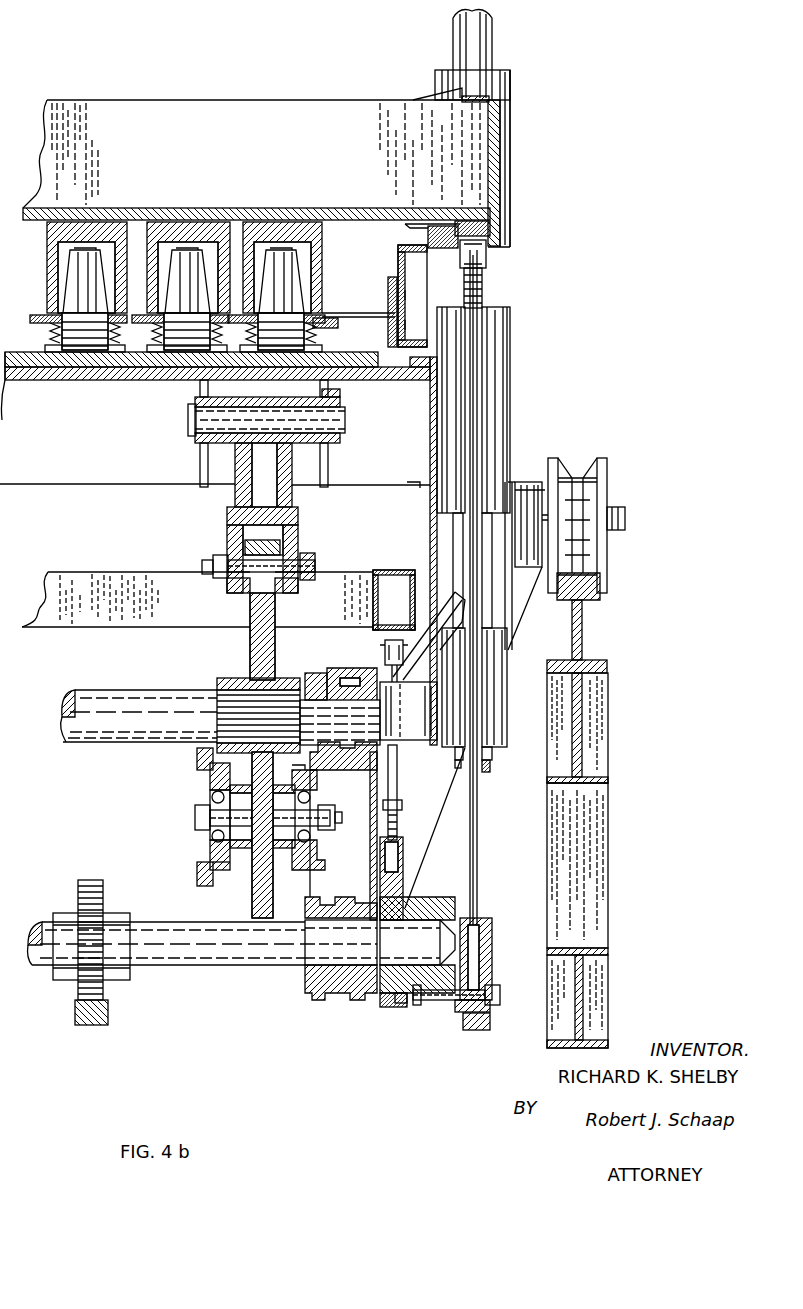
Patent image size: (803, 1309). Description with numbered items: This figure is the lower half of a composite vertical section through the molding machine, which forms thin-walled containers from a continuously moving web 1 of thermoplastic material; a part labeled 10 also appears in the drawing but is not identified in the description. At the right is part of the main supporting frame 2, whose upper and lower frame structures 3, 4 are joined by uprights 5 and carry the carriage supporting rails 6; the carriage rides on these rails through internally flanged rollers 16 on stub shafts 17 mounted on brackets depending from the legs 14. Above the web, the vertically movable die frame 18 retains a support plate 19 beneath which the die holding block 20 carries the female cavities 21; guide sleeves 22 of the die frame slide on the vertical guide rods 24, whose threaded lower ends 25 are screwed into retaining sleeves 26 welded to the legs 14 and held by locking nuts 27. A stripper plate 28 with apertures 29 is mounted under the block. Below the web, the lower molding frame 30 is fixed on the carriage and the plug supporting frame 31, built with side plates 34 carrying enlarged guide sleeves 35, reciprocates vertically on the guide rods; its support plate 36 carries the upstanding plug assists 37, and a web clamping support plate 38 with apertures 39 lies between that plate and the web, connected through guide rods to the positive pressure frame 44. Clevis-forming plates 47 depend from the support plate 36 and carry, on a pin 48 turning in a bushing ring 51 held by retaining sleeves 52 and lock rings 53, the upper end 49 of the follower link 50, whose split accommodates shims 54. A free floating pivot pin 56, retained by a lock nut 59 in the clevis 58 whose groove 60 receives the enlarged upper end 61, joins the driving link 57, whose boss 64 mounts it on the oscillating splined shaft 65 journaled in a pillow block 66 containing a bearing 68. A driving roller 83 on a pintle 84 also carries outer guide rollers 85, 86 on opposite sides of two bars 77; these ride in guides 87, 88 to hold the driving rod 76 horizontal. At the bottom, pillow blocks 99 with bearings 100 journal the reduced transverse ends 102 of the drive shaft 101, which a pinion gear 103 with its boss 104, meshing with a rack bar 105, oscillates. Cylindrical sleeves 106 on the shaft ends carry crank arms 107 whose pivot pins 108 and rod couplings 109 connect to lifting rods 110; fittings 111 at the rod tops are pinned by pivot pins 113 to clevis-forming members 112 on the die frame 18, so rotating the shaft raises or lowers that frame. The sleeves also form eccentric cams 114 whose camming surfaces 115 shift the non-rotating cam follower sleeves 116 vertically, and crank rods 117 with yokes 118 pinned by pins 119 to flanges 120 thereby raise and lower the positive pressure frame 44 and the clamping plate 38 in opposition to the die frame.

The web 1 is at (350, 312).
The main supporting frame 2 is at (498, 306).
The upper frame structure 3 is at (609, 1010).
The lower frame structure 4 is at (609, 720).
The uprights 5 is at (609, 868).
The carriage supporting rails 6 is at (583, 638).
The channel bracket 10 is at (380, 299).
The legs 14 is at (527, 482).
The internally flanged rollers 16 is at (608, 478).
The stub shafts 17 is at (626, 516).
The die frame 18 is at (496, 170).
The support plate 19 is at (240, 226).
The die holding block 20 is at (163, 230).
The cavities 21 is at (180, 240).
The guide sleeves 22 is at (507, 200).
The guide rods 24 is at (493, 48).
The threaded lower ends 25 is at (492, 770).
The retaining sleeves 26 is at (508, 716).
The locking nuts 27 is at (493, 758).
The stripper plate 28 is at (125, 322).
The apertures 29 is at (155, 340).
The lower molding frame 30 is at (138, 488).
The plug supporting frame 31 is at (40, 366).
The side plates 34 is at (364, 551).
The guide sleeves 35 is at (511, 422).
The support plate 36 is at (366, 370).
The plug assists 37 is at (290, 250).
The web clamping support plate 38 is at (339, 324).
The apertures 39 is at (66, 350).
The positive pressure frame 44 is at (358, 573).
The clevis-forming plates 47 is at (328, 470).
The pin 48 is at (190, 425).
The upper end 49 is at (286, 470).
The follower link 50 is at (240, 493).
The bushing ring 51 is at (200, 460).
The retaining sleeves 52 is at (341, 438).
The lock rings 53 is at (194, 400).
The shims 54 is at (299, 516).
The pivot pin 56 is at (202, 566).
The driving link 57 is at (250, 646).
The clevis 58 is at (299, 589).
The lock nut 59 is at (216, 576).
The groove 60 is at (228, 531).
The upper end 61 is at (281, 548).
The boss 64 is at (217, 683).
The splined shaft 65 is at (64, 738).
The pillow block 66 is at (316, 672).
The bearing 68 is at (330, 676).
The driving rod 76 is at (275, 868).
The bars 77 is at (230, 862).
The driving roller 83 is at (212, 779).
The pintle 84 is at (196, 818).
The guide roller 85 is at (318, 793).
The guide roller 86 is at (212, 846).
The guide 87 is at (198, 760).
The guide 88 is at (318, 856).
The pillow blocks 99 is at (362, 997).
The bearings 100 is at (306, 972).
The drive shaft 101 is at (232, 966).
The transverse ends 102 is at (412, 930).
The pinion gear 103 is at (86, 880).
The boss 104 is at (126, 913).
The rack bar 105 is at (108, 1025).
The cylindrical sleeves 106 is at (471, 926).
The crank arms 107 is at (430, 1001).
The pivot pins 108 is at (501, 995).
The rod couplings 109 is at (491, 1027).
The lifting rods 110 is at (479, 866).
The fittings 111 is at (483, 274).
The clevis-forming members 112 is at (491, 231).
The pivot pins 113 is at (487, 253).
The cams 114 is at (386, 1008).
The camming surfaces 115 is at (397, 1005).
The cam follower sleeves 116 is at (404, 856).
The crank rods 117 is at (398, 777).
The yokes 118 is at (412, 684).
The pins 119 is at (383, 645).
The flanges 120 is at (418, 640).